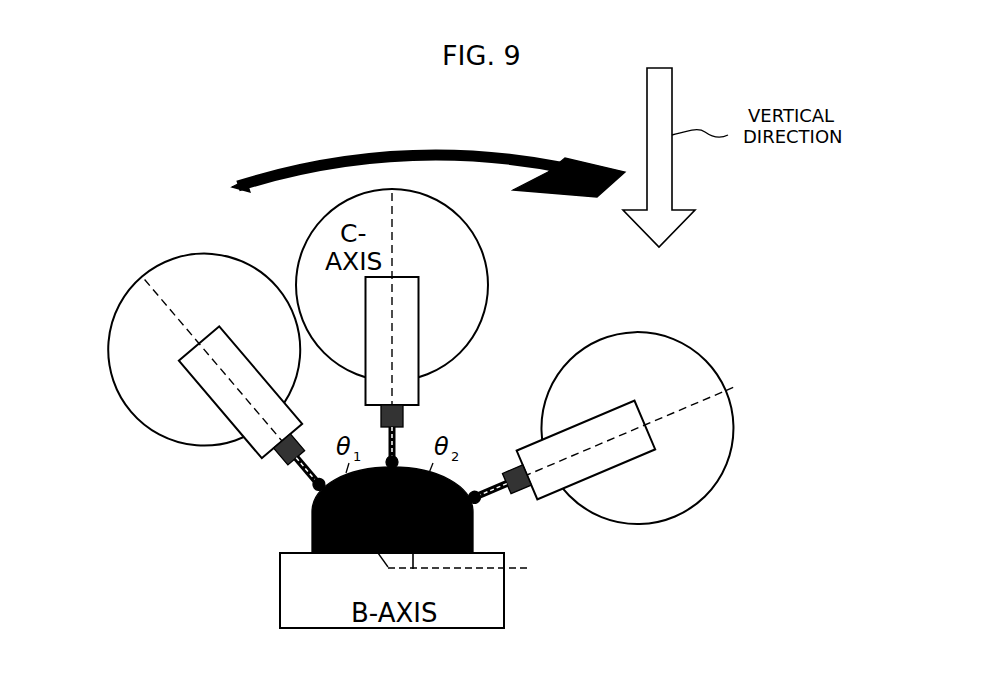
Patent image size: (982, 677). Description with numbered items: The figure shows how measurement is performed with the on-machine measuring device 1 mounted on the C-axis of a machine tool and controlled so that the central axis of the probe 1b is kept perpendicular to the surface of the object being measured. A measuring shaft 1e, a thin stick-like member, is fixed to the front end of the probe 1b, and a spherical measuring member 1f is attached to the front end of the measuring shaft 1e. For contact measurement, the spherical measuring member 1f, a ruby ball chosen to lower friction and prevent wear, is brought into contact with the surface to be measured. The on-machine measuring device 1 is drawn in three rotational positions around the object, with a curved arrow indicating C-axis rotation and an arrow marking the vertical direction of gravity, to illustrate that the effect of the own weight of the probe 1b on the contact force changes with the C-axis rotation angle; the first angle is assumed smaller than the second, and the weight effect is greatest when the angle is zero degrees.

The on-machine measuring device 1 is at (220, 411).
The probe 1b is at (281, 457).
The measuring shaft 1e is at (300, 468).
The spherical measuring member 1f is at (313, 487).